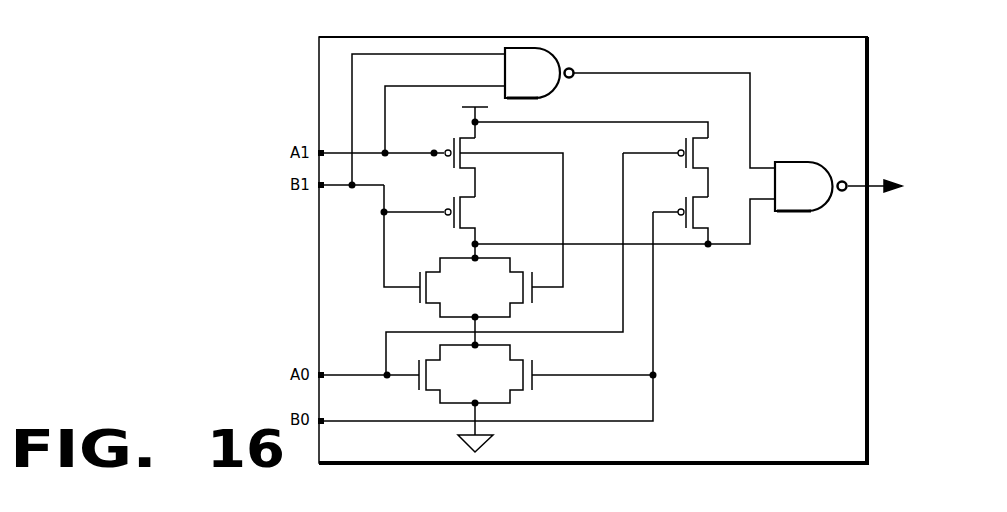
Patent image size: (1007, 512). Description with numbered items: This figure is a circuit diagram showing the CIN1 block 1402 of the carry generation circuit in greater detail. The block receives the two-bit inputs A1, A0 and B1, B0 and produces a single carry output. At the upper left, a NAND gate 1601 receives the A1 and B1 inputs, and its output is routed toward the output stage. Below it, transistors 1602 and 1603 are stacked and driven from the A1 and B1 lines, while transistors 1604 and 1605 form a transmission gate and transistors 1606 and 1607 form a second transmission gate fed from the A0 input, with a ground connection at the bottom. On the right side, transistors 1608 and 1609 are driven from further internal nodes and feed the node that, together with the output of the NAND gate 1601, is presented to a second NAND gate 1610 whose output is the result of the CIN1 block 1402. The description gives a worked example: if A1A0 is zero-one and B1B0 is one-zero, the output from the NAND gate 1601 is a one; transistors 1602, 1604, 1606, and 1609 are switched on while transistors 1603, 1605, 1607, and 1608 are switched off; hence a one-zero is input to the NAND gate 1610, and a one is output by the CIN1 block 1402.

The CIN1 block 1402 is at (838, 75).
The NAND gate 1601 is at (547, 83).
The transistor 1602 is at (522, 148).
The transistor 1603 is at (506, 221).
The transistor 1604 is at (467, 298).
The transistor 1605 is at (522, 298).
The transistor 1606 is at (468, 386).
The transistor 1607 is at (523, 386).
The transistor 1608 is at (737, 165).
The transistor 1609 is at (737, 223).
The NAND gate 1610 is at (823, 196).